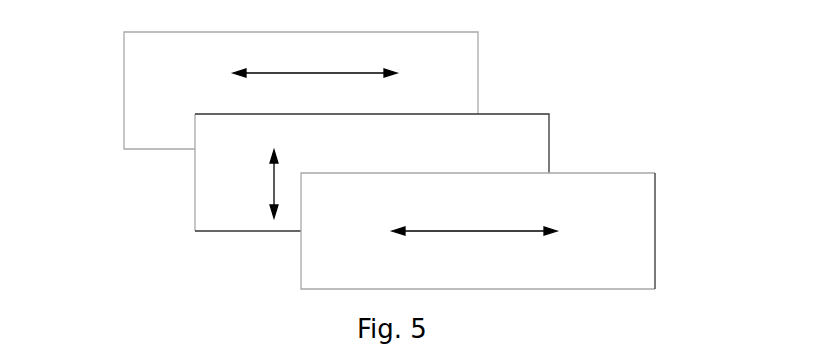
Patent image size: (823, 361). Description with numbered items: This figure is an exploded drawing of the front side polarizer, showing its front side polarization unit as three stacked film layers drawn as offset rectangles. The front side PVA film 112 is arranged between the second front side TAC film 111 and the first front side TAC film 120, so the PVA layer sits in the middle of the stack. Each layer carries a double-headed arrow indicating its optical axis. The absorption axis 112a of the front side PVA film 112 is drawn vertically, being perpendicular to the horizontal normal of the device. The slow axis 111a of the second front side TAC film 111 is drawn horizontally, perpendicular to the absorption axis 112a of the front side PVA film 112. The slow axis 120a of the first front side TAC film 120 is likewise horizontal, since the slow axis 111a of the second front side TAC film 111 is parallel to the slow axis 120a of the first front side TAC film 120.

The first front side TAC film 120 is at (478, 51).
The slow axis of the first front side TAC film 120a is at (233, 73).
The front side PVA film 112 is at (549, 143).
The absorption axis of the front side PVA film 112a is at (274, 178).
The second front side TAC film 111 is at (655, 230).
The slow axis of the second front side TAC film 111a is at (412, 231).